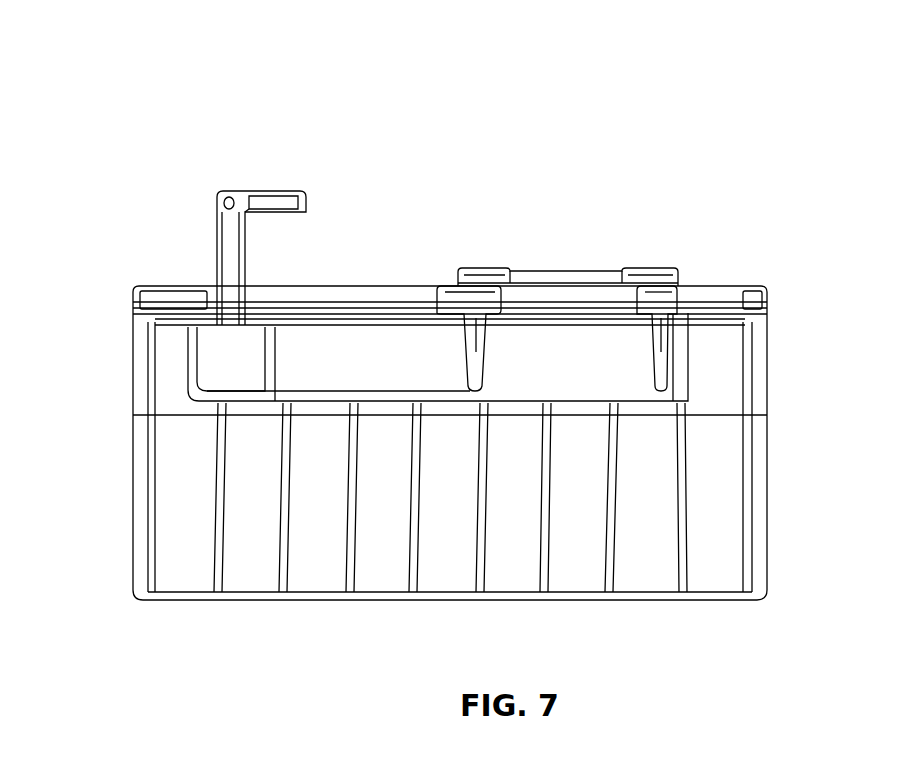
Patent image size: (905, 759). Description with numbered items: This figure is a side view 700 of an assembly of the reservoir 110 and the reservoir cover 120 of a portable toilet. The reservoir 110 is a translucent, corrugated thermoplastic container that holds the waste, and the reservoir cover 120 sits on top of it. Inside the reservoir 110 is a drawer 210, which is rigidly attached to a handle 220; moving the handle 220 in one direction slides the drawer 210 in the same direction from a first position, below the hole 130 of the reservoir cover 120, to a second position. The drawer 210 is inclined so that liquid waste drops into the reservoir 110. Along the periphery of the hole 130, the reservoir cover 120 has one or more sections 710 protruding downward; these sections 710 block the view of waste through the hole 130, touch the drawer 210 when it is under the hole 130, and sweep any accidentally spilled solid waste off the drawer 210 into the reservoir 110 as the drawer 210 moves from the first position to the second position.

The side view 700 is at (203, 108).
The reservoir 110 is at (167, 466).
The reservoir cover 120 is at (757, 287).
The hole 130 is at (562, 297).
The drawer 210 is at (293, 400).
The handle 220 is at (230, 225).
The sections 710 is at (477, 352).